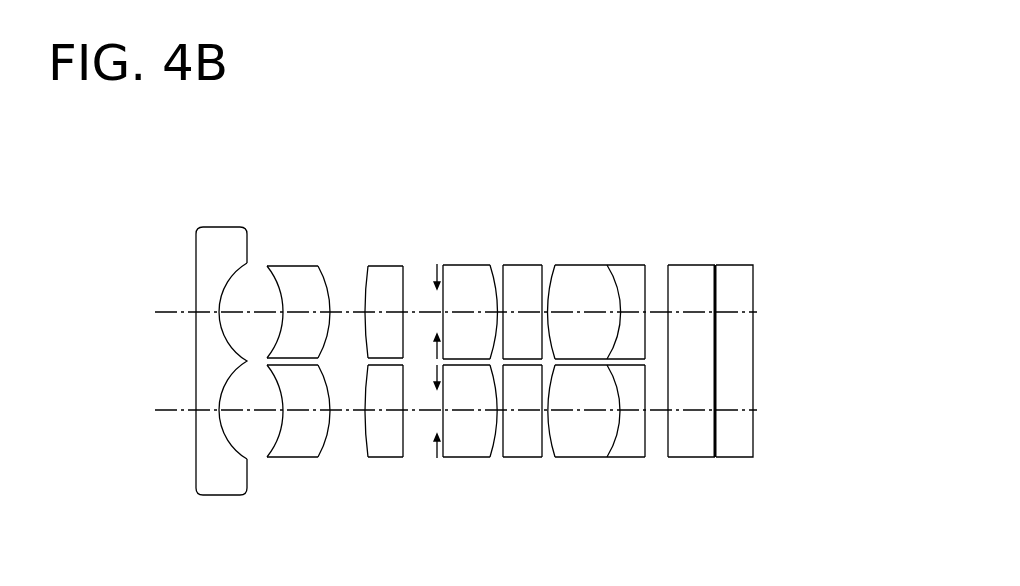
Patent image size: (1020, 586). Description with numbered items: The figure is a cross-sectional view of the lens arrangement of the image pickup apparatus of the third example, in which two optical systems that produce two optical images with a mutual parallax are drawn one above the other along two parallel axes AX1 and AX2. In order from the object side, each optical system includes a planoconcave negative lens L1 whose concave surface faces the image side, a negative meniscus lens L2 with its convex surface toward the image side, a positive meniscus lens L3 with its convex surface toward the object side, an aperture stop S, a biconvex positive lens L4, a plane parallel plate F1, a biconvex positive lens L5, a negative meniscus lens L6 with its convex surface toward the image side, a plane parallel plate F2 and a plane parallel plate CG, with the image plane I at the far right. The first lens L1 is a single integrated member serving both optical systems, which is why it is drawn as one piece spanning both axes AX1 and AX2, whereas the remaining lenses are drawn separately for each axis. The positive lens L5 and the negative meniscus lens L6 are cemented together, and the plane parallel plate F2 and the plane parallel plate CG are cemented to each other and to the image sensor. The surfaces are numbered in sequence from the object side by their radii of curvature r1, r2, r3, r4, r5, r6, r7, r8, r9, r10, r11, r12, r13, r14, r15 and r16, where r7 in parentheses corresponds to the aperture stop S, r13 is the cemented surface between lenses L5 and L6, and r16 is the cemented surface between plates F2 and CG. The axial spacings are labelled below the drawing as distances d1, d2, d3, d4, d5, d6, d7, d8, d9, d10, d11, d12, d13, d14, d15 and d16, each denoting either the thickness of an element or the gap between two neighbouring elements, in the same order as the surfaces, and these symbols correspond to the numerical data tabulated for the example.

The planoconcave negative lens L1 is at (215, 325).
The negative meniscus lens L2 is at (298, 306).
The positive meniscus lens L3 is at (365, 306).
The aperture stop S is at (416, 306).
The biconvex positive lens L4 is at (463, 306).
The plane parallel plate F1 is at (526, 306).
The biconvex positive lens L5 is at (591, 306).
The negative meniscus lens L6 is at (640, 306).
The plane parallel plate F2 is at (709, 306).
The plane parallel plate CG is at (745, 264).
The image plane I is at (755, 281).
The first optical axis AX1 is at (168, 310).
The second optical axis AX2 is at (168, 409).
The radius of curvature r1 is at (196, 252).
The radius of curvature r2 is at (233, 276).
The radius of curvature r3 is at (268, 266).
The radius of curvature r4 is at (323, 275).
The radius of curvature r5 is at (366, 275).
The radius of curvature r6 is at (403, 268).
The radius of curvature r7 is at (436, 265).
The radius of curvature r8 is at (443, 268).
The radius of curvature r9 is at (495, 272).
The radius of curvature r10 is at (503, 268).
The radius of curvature r11 is at (542, 268).
The radius of curvature r12 is at (553, 270).
The radius of curvature r13 is at (609, 270).
The radius of curvature r14 is at (645, 272).
The radius of curvature r15 is at (668, 272).
The radius of curvature r16 is at (715, 268).
The distance d1 is at (208, 313).
The distance d2 is at (256, 313).
The distance d3 is at (301, 313).
The distance d4 is at (348, 313).
The distance d5 is at (384, 313).
The distance d6 is at (420, 313).
The distance d7 is at (441, 313).
The distance d8 is at (471, 313).
The distance d9 is at (500, 313).
The distance d10 is at (522, 313).
The distance d11 is at (545, 313).
The distance d12 is at (581, 313).
The distance d13 is at (631, 313).
The distance d14 is at (656, 313).
The distance d15 is at (691, 313).
The distance d16 is at (735, 313).